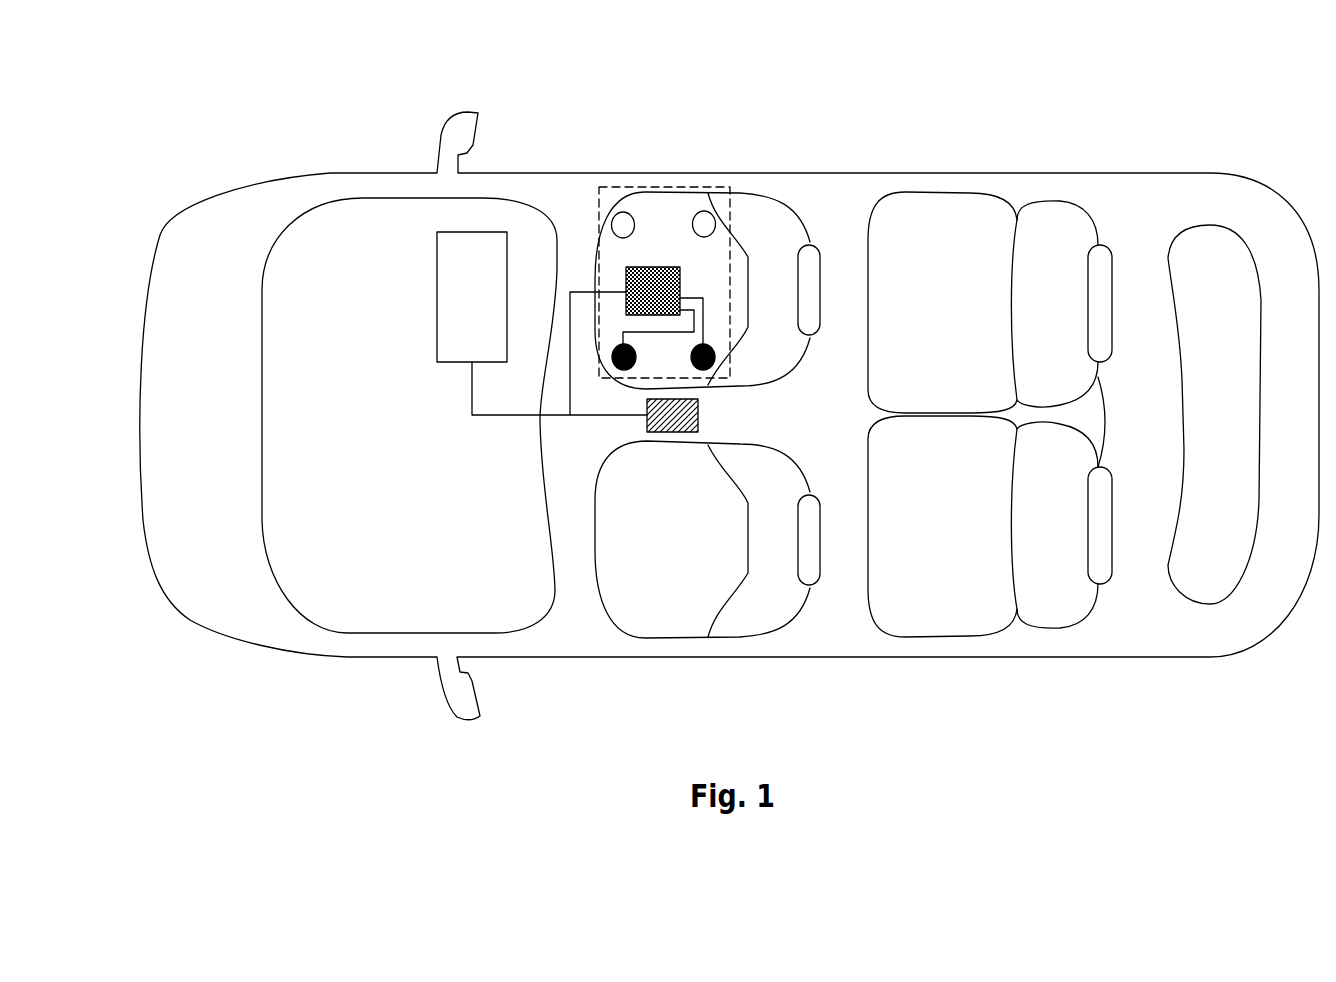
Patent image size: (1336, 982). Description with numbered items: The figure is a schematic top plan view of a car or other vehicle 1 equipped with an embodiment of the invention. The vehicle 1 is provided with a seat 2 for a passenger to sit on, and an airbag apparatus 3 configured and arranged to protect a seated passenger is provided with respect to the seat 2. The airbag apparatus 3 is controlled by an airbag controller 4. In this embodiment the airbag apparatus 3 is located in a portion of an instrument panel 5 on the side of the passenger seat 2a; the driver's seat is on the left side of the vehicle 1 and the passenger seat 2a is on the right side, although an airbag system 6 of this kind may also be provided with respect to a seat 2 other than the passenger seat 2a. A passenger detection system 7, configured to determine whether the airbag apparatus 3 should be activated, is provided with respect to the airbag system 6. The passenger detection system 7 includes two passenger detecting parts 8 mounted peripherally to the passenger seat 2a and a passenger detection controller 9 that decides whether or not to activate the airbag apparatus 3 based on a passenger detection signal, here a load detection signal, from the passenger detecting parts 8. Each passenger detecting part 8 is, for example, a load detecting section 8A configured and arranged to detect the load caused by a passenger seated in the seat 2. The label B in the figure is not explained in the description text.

The vehicle 1 is at (287, 175).
The seat 2 is at (853, 393).
The passenger seat 2a is at (797, 212).
The airbag apparatus 3 is at (487, 232).
The airbag controller 4 is at (668, 434).
The instrument panel 5 is at (357, 198).
The airbag system 6 is at (482, 440).
The passenger detection system 7 is at (730, 243).
The passenger detecting part 8 is at (651, 212).
The load detecting section 8A is at (711, 342).
The passenger detection controller 9 is at (665, 266).
The occupant B is at (831, 216).